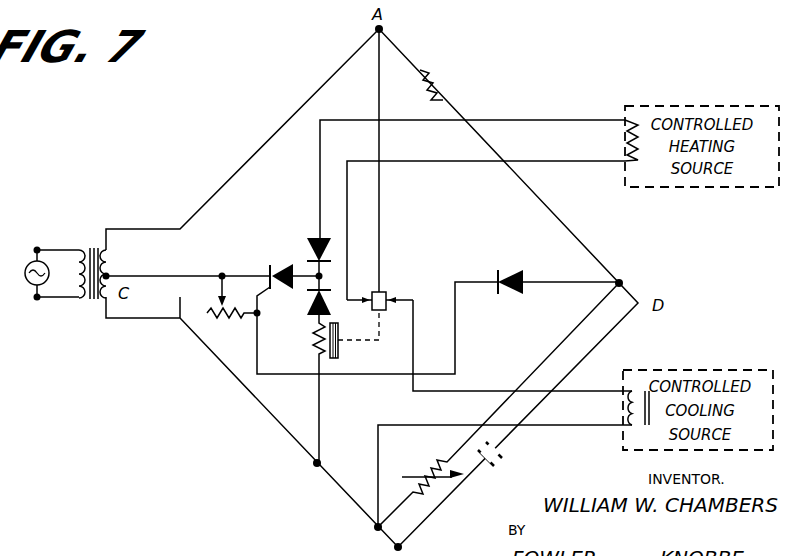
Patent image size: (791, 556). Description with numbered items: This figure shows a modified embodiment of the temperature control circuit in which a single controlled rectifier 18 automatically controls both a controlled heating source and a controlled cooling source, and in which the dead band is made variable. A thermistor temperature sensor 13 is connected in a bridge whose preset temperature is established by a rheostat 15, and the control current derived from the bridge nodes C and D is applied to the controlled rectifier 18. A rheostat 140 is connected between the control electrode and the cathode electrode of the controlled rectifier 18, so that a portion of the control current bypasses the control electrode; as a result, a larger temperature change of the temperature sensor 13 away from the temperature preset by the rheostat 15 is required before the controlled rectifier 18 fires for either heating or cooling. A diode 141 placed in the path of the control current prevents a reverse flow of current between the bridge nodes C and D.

The temperature sensor 13 is at (431, 81).
The controlled rectifier 18 is at (283, 260).
The rheostat 140 is at (207, 317).
The diode 141 is at (509, 256).
The rheostat 15 is at (431, 469).